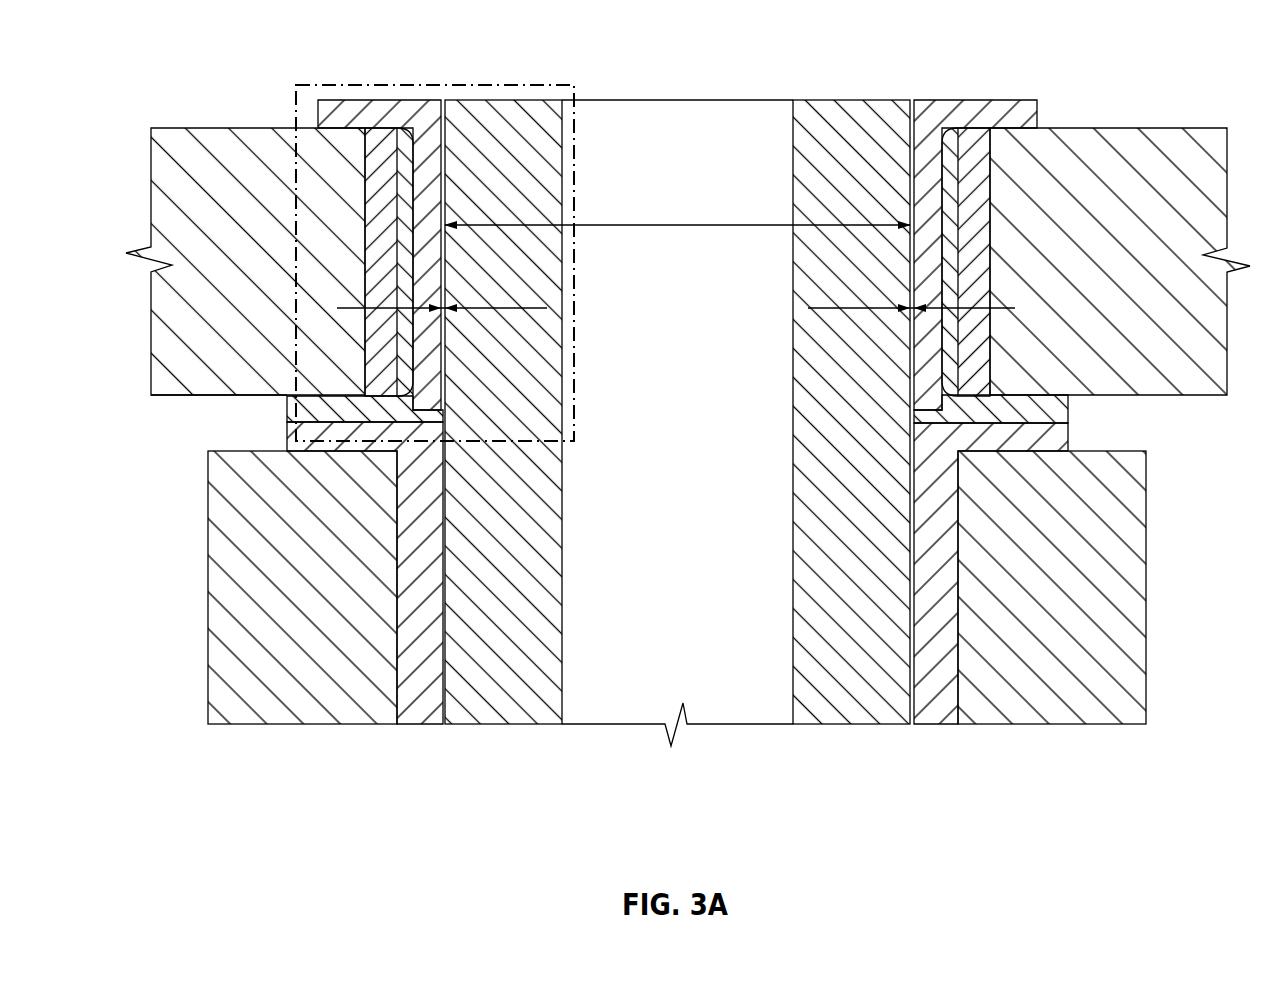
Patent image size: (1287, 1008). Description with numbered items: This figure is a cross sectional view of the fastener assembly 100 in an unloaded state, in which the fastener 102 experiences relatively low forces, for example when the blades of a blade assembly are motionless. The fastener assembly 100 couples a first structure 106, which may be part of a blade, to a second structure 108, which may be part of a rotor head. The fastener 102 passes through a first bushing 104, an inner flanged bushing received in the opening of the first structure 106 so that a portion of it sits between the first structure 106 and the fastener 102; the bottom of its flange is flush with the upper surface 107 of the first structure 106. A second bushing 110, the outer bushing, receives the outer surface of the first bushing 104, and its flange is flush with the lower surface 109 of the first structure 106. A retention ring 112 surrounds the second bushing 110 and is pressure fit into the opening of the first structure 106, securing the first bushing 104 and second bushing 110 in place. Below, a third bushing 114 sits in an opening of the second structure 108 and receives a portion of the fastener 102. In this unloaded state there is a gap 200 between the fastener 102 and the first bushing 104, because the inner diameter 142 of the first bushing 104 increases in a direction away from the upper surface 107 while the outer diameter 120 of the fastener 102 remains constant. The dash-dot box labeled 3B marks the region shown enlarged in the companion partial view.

The fastener assembly 100 is at (1014, 78).
The fastener 102 is at (490, 118).
The first bushing 104 is at (412, 110).
The first structure 106 is at (213, 147).
The upper surface 107 is at (242, 127).
The second structure 108 is at (232, 527).
The lower surface 109 is at (162, 398).
The second bushing 110 is at (313, 403).
The retention ring 112 is at (973, 135).
The third bushing 114 is at (948, 587).
The outer diameter 120 is at (441, 532).
The inner diameter 142 is at (682, 222).
The gap 200 is at (535, 308).
The detail region of FIG. 3B is at (335, 83).